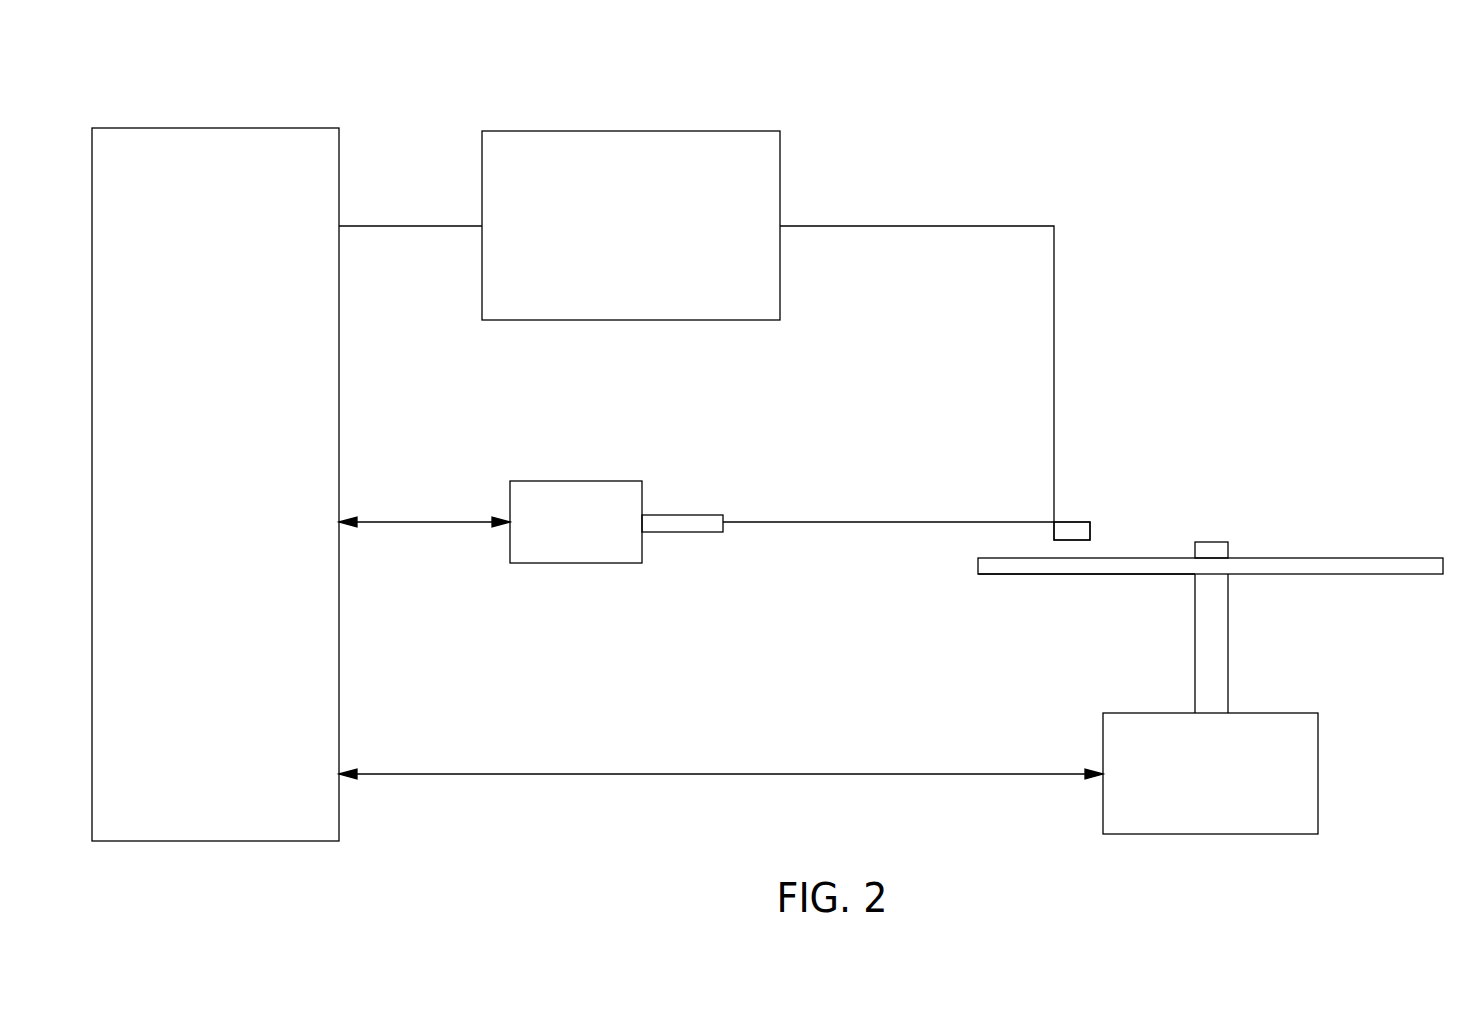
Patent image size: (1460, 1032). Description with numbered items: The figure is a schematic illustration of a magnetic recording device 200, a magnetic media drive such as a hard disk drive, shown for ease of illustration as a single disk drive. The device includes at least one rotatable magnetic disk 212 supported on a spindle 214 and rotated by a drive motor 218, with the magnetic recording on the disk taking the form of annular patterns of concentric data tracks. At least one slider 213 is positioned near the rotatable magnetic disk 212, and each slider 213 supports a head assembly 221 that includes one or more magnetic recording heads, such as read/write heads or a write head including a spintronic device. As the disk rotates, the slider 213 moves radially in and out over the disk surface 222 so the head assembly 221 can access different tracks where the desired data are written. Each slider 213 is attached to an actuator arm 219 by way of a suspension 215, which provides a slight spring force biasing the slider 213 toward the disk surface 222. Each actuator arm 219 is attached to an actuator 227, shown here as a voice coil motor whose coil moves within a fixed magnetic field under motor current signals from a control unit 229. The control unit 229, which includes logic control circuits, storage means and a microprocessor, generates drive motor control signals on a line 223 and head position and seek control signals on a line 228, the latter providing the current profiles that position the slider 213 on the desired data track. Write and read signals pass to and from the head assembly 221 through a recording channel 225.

The magnetic recording device 200 is at (1250, 92).
The rotatable magnetic disk 212 is at (1112, 580).
The slider 213 is at (1073, 522).
The spindle 214 is at (1228, 645).
The suspension 215 is at (852, 522).
The drive motor 218 is at (1318, 773).
The actuator arm 219 is at (692, 515).
The head assembly 221 is at (1090, 530).
The disk surface 222 is at (1333, 558).
The line 223 is at (620, 774).
The recording channel 225 is at (633, 131).
The actuator 227 is at (538, 481).
The line 228 is at (425, 520).
The control unit 229 is at (217, 128).